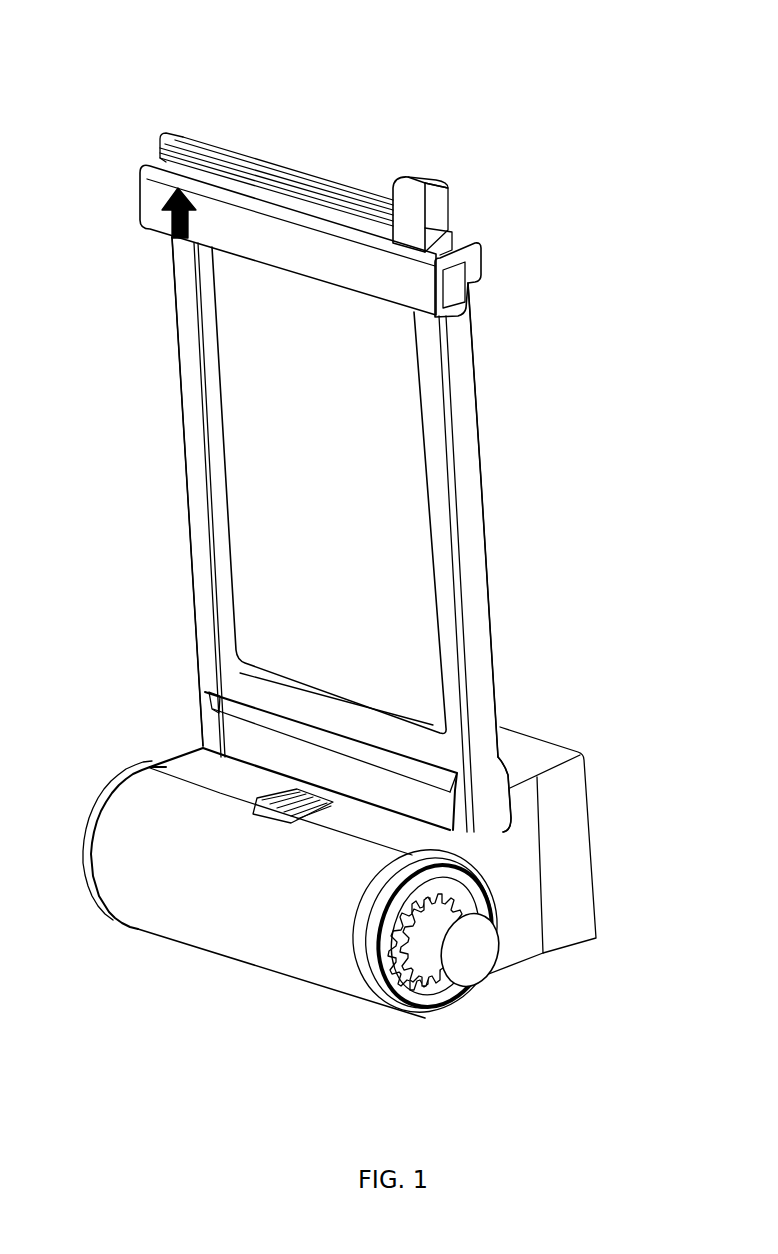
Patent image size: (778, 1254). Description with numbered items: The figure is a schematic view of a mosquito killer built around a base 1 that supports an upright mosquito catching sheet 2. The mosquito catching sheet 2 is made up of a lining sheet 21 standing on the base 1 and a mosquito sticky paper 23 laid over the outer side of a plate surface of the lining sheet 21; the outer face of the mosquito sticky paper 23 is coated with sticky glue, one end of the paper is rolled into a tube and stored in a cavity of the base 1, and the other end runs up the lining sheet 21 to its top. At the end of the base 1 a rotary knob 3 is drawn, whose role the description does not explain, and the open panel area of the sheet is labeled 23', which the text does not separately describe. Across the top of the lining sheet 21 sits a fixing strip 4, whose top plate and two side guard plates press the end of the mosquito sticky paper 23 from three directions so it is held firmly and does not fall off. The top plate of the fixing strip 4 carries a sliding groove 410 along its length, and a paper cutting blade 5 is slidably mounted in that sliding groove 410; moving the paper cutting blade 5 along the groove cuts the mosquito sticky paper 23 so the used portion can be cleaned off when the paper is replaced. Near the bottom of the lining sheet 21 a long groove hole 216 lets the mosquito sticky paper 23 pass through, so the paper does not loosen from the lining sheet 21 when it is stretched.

The base 1 is at (517, 887).
The mosquito catching sheet 2 is at (613, 402).
The rotary knob 3 is at (467, 950).
The fixing strip 4 is at (143, 163).
The paper cutting blade 5 is at (415, 175).
The lining sheet 21 is at (462, 407).
The mosquito sticky paper 23 is at (592, 794).
The frame opening panel 23' is at (413, 490).
The long groove hole 216 is at (217, 698).
The sliding groove 410 is at (202, 143).